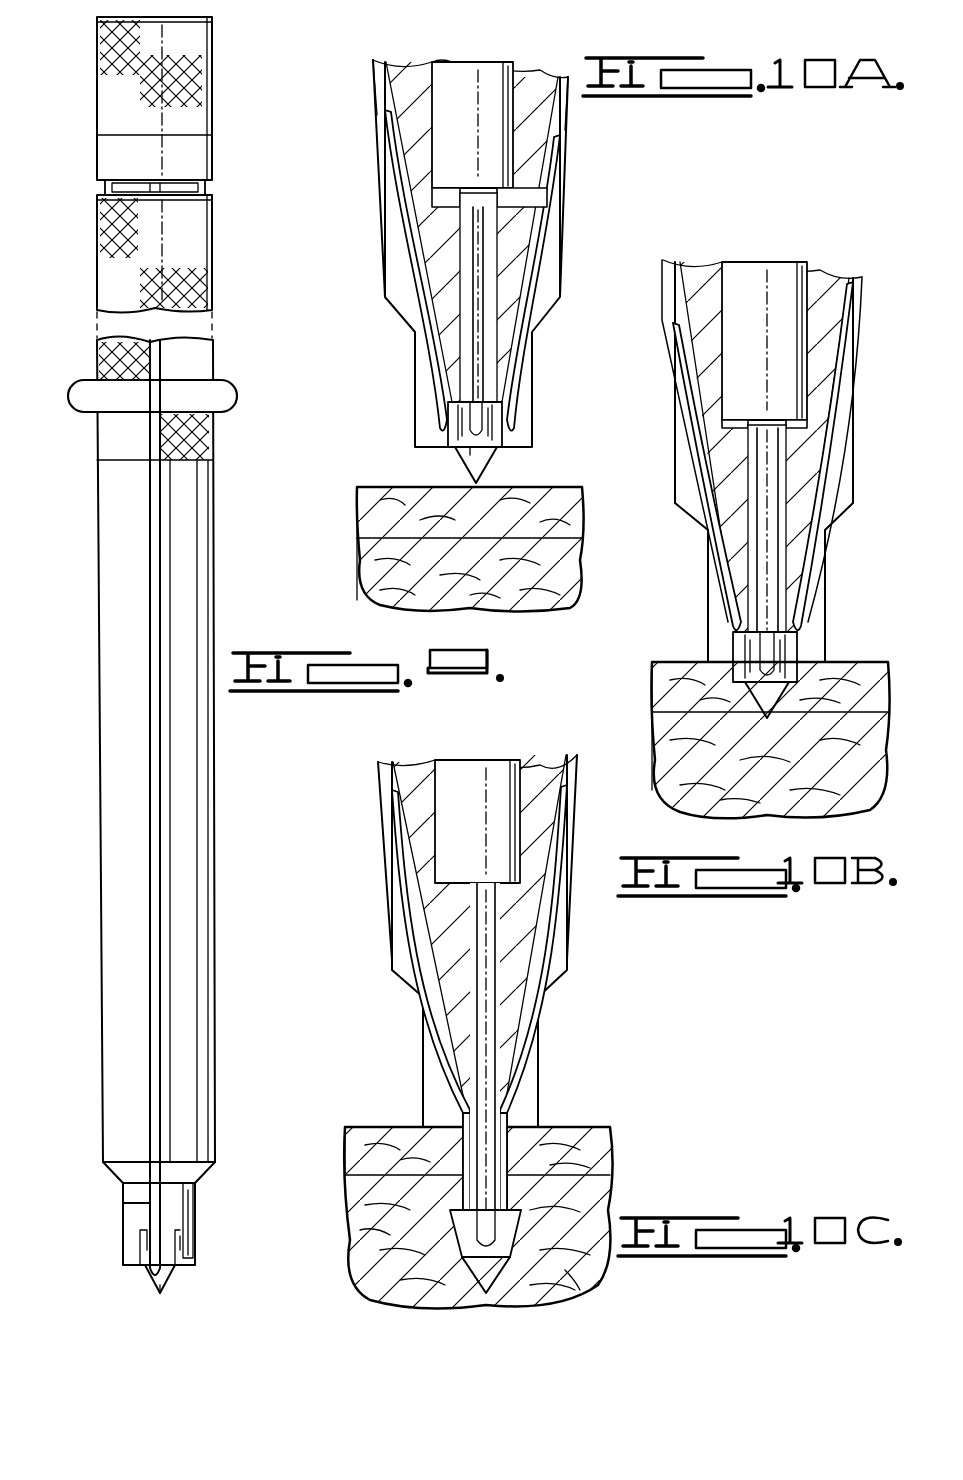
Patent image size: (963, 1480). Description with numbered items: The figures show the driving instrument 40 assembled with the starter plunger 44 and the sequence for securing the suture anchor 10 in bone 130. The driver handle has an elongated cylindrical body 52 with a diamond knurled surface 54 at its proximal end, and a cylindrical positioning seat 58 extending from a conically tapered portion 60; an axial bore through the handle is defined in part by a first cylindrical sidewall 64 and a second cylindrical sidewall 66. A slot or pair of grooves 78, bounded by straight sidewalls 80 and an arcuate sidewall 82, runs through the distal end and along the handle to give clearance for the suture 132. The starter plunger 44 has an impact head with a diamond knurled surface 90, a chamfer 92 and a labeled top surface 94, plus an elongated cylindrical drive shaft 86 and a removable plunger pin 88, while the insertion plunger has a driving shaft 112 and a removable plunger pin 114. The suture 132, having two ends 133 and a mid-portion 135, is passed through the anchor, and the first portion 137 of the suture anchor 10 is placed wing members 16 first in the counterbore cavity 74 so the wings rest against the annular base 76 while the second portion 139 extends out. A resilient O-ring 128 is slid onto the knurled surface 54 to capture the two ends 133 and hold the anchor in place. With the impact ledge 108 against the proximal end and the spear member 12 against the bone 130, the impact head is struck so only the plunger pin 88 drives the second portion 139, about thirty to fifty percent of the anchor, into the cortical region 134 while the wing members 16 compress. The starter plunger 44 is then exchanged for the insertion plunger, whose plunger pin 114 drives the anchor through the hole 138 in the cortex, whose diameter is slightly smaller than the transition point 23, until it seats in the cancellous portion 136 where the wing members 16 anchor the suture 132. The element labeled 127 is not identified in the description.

In FIG. 9, the suture anchor 10 is at (148, 1283).
In FIG. 10A, the spear member 12 is at (480, 468).
In FIG. 10B, the wing members 16 is at (838, 612).
In FIG. 10C, the transition point 23 is at (575, 1275).
In FIG. 9, the driving instrument 40 is at (247, 148).
In FIG. 9, the starter plunger 44 is at (197, 54).
In FIG. 9, the elongated cylindrical body 52 is at (214, 828).
In FIG. 9, the diamond knurled surface 54 is at (195, 258).
In FIG. 9, the cylindrical positioning seat 58 is at (185, 1200).
In FIG. 10A, the cylindrical positioning seat 58 is at (533, 388).
In FIG. 10B, the cylindrical positioning seat 58 is at (762, 461).
In FIG. 9, the conically tapered portion 60 is at (215, 1172).
In FIG. 10A, the conically tapered portion 60 is at (560, 302).
In FIG. 10A, the first cylindrical sidewall 64 is at (432, 75).
In FIG. 10A, the second cylindrical sidewall 66 is at (462, 240).
In FIG. 9, the counterbore cavity 74 is at (134, 1277).
In FIG. 10A, the annular base 76 is at (450, 403).
In FIG. 10B, the annular base 76 is at (735, 636).
In FIG. 9, the slot or grooves 78 is at (140, 1208).
In FIG. 10A, the straight sidewalls 80 is at (553, 258).
In FIG. 10B, the straight sidewalls 80 is at (842, 488).
In FIG. 10C, the straight sidewalls 80 is at (555, 936).
In FIG. 10B, the arcuate sidewall 82 is at (835, 380).
In FIG. 10A, the elongated cylindrical drive shaft 86 is at (477, 80).
In FIG. 10B, the elongated cylindrical drive shaft 86 is at (765, 270).
In FIG. 10A, the removable plunger pin 88 is at (482, 232).
In FIG. 10B, the removable plunger pin 88 is at (780, 532).
In FIG. 9, the diamond knurled surface 90 is at (100, 70).
In FIG. 9, the chamfer 92 is at (212, 18).
In FIG. 9, the labeled top surface 94 is at (112, 15).
In FIG. 9, the impact ledge 108 is at (103, 187).
In FIG. 10C, the driving shaft 112 is at (465, 785).
In FIG. 10C, the removable plunger pin 114 is at (480, 993).
In FIG. 10C, the cutting edge 127 is at (540, 1262).
In FIG. 9, the resilient O-ring 128 is at (232, 393).
In FIG. 10A, the bone 130 is at (571, 487).
In FIG. 10B, the bone 130 is at (840, 665).
In FIG. 10C, the bone 130 is at (570, 1127).
In FIG. 9, the suture 132 is at (170, 492).
In FIG. 10A, the suture 132 is at (565, 145).
In FIG. 10B, the suture 132 is at (858, 282).
In FIG. 10C, the suture 132 is at (441, 1100).
In FIG. 9, the two ends 133 is at (153, 370).
In FIG. 10A, the cortical region 134 is at (365, 515).
In FIG. 10B, the cortical region 134 is at (663, 665).
In FIG. 10C, the cortical region 134 is at (356, 1135).
In FIG. 9, the mid-portion 135 is at (150, 1257).
In FIG. 10A, the cancellous portion 136 is at (365, 578).
In FIG. 10B, the cancellous portion 136 is at (655, 718).
In FIG. 9, the first portion 137 is at (208, 1248).
In FIG. 10A, the first portion 137 is at (450, 417).
In FIG. 10B, the first portion 137 is at (730, 646).
In FIG. 10C, the hole 138 is at (512, 1160).
In FIG. 9, the second portion 139 is at (140, 1302).
In FIG. 10A, the second portion 139 is at (470, 470).
In FIG. 10B, the second portion 139 is at (832, 672).